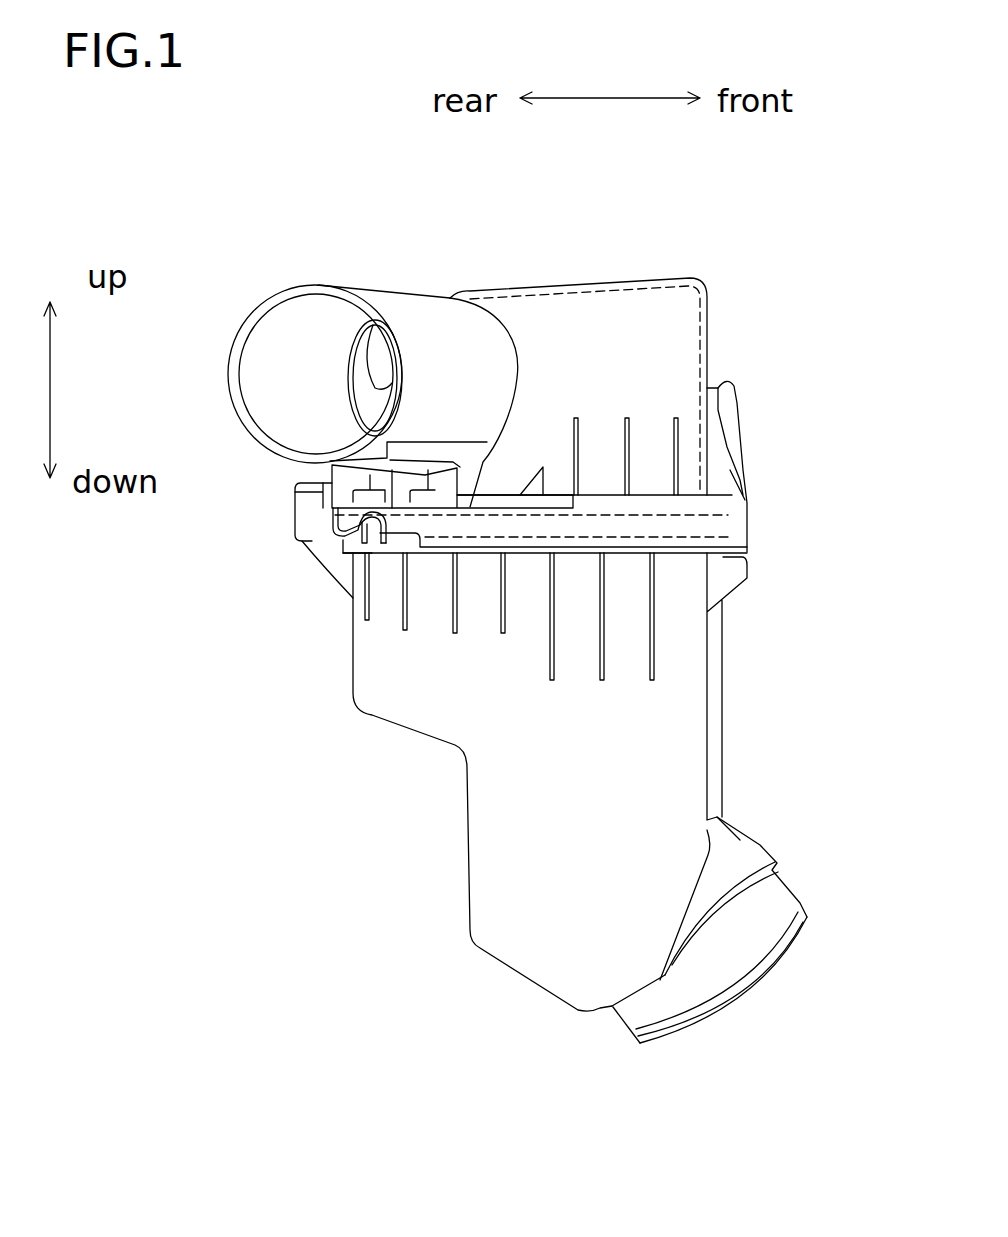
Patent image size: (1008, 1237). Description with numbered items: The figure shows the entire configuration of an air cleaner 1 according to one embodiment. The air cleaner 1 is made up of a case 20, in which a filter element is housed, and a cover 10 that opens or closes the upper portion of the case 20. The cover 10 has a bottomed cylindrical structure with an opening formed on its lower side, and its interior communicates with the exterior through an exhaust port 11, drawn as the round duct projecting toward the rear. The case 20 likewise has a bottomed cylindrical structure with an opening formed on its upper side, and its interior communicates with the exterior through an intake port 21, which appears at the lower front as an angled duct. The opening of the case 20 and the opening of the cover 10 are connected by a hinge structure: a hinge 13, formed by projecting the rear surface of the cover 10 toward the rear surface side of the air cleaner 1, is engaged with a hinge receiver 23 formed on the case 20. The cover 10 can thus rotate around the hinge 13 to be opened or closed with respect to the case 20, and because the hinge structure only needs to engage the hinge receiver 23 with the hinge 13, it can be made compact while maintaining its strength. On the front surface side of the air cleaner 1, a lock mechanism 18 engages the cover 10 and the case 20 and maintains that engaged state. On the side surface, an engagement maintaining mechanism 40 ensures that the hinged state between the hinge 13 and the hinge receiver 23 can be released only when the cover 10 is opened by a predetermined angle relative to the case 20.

The air cleaner 1 is at (806, 279).
The cover 10 is at (603, 303).
The exhaust port 11 is at (275, 407).
The hinge 13 is at (297, 523).
The lock mechanism 18 is at (747, 520).
The case 20 is at (490, 833).
The intake port 21 is at (730, 962).
The hinge receiver 23 is at (312, 535).
The engagement maintaining mechanism 40 is at (357, 551).